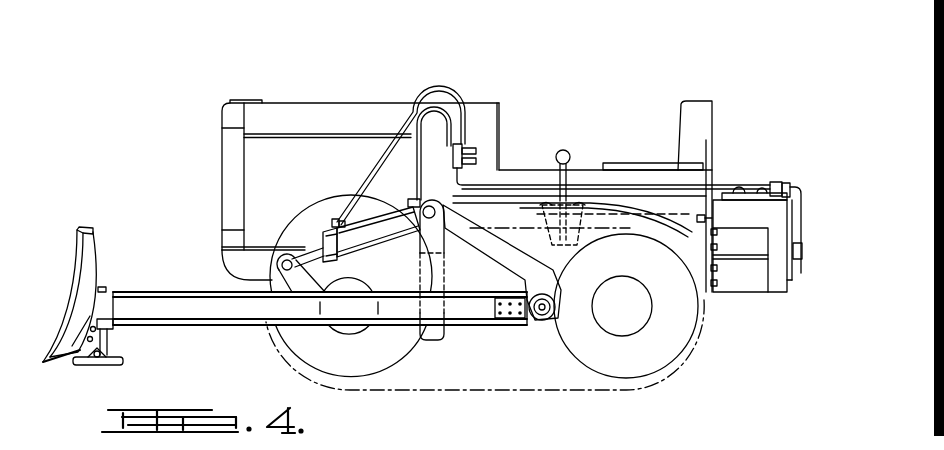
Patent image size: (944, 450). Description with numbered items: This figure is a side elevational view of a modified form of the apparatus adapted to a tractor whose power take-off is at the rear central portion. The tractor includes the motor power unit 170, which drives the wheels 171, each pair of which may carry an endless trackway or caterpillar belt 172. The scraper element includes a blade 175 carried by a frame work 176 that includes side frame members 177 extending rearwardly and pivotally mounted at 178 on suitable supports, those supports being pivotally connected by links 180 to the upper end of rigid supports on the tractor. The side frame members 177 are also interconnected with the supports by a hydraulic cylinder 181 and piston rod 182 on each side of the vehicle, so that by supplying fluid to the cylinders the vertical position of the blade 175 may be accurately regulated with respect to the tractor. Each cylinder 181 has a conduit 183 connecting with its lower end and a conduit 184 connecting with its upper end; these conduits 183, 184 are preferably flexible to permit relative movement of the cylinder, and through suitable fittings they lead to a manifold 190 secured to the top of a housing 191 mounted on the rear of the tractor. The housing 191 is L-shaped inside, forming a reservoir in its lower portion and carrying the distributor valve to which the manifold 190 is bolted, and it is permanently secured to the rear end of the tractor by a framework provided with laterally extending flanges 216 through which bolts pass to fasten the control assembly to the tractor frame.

The motor power unit 170 is at (316, 146).
The wheels 171 is at (290, 342).
The endless trackway 172 is at (490, 382).
The blade 175 is at (418, 265).
The frame work 176 is at (92, 273).
The side frame members 177 is at (162, 305).
The pivotal mounting 178 is at (543, 317).
The links 180 is at (501, 252).
The hydraulic cylinder 181 is at (372, 223).
The piston rod 182 is at (314, 230).
The conduit 183 is at (415, 96).
The conduit 184 is at (446, 108).
The manifold 190 is at (768, 182).
The housing 191 is at (778, 286).
The laterally extending flanges 216 is at (715, 294).